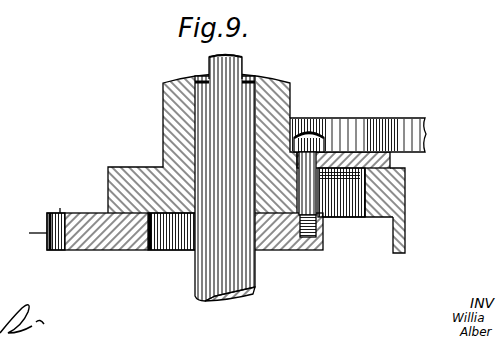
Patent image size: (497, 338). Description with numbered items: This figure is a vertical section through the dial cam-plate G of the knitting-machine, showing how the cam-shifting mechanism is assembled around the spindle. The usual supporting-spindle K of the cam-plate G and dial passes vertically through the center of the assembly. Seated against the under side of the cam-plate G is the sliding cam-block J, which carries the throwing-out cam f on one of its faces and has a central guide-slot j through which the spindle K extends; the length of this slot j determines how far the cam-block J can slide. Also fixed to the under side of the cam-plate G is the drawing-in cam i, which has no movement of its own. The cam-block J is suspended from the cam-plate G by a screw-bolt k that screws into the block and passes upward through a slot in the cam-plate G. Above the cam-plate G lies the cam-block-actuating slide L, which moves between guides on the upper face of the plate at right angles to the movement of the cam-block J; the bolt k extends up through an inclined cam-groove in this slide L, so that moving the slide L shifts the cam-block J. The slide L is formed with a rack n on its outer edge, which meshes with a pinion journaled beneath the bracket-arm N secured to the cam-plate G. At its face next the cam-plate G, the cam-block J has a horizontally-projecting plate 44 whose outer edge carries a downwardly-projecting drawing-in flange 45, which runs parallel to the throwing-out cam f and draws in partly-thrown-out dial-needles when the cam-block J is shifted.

The rotary dial cam-plate G is at (121, 167).
The supporting-spindle K is at (241, 66).
The sliding cam-block J is at (122, 251).
The central guide-slot j is at (178, 250).
The throwing-out cam f is at (58, 251).
The bracket-arm N is at (389, 119).
The rack n is at (390, 158).
The cam-block-actuating slide L is at (352, 150).
The screw-bolt k is at (298, 182).
The drawing-in cam i is at (345, 214).
The horizontally-projecting plate 44 is at (68, 208).
The drawing-in flange 45 is at (29, 233).